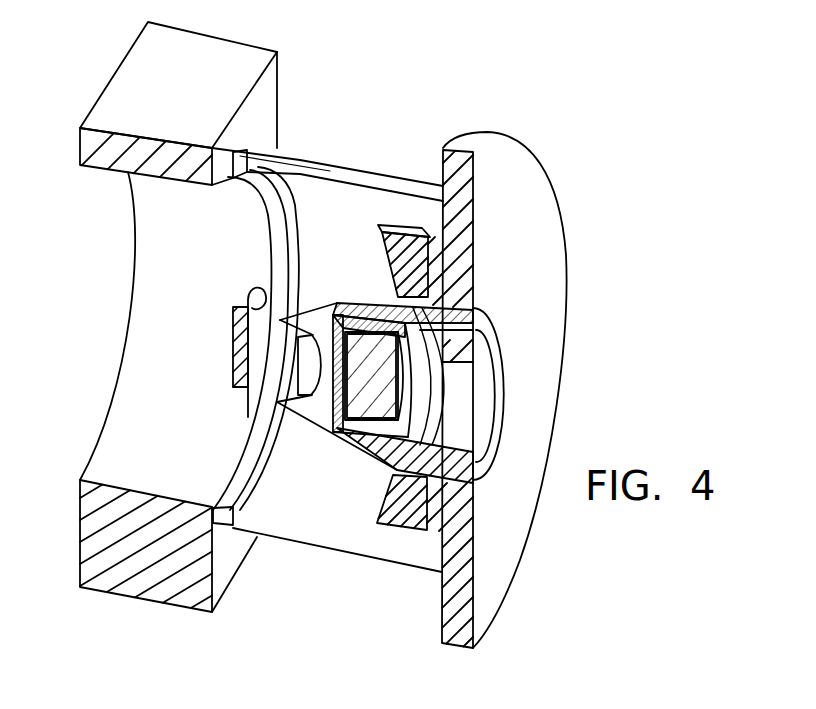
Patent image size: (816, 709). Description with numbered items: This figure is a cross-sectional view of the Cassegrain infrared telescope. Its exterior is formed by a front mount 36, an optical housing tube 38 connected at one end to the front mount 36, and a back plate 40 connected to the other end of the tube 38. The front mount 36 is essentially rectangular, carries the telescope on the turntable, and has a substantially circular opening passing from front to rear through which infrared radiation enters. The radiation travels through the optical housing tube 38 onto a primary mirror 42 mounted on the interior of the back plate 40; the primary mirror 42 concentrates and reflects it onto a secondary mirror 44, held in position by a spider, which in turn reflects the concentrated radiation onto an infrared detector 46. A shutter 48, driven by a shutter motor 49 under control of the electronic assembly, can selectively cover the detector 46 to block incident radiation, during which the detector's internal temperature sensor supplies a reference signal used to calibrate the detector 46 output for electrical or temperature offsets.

The front mount 36 is at (246, 72).
The optical housing tube 38 is at (324, 543).
The back plate 40 is at (538, 204).
The primary mirror 42 is at (390, 249).
The secondary mirror 44 is at (266, 283).
The infrared detector 46 is at (360, 405).
The shutter 48 is at (340, 428).
The shutter motor 49 is at (473, 370).